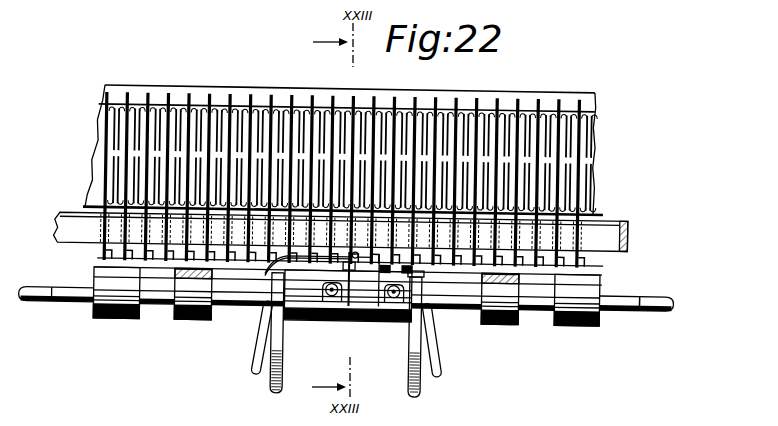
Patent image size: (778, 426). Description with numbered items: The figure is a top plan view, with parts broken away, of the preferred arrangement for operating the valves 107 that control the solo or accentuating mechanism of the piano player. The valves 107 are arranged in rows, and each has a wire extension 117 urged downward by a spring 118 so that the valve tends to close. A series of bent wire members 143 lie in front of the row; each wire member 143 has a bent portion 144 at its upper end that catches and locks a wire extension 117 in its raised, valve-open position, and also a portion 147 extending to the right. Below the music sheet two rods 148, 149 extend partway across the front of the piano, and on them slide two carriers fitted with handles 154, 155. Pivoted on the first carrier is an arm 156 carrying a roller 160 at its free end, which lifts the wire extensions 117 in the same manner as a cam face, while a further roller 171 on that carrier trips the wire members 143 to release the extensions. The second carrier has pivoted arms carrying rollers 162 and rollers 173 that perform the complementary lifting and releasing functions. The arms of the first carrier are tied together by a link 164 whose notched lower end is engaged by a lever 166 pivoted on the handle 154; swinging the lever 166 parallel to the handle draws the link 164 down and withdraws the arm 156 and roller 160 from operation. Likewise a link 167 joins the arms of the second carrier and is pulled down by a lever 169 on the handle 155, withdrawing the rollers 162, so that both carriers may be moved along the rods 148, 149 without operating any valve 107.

The valve 107 is at (582, 168).
The spring 118 is at (433, 106).
The wire extension 117 is at (607, 216).
The bent portion 144 is at (86, 208).
The wire member 143 is at (606, 262).
The portion extending to the right 147 is at (603, 268).
The rod 148 is at (627, 311).
The rod 149 is at (681, 310).
The arm 156 is at (277, 280).
The handle 154 is at (278, 390).
The lever 166 is at (256, 371).
The roller 171 is at (421, 296).
The handle 155 is at (421, 392).
The lever 169 is at (445, 373).
The roller 173 is at (467, 307).
The link 164 is at (332, 300).
The link 167 is at (384, 302).
The roller 162 is at (352, 302).
The roller 160 is at (362, 300).